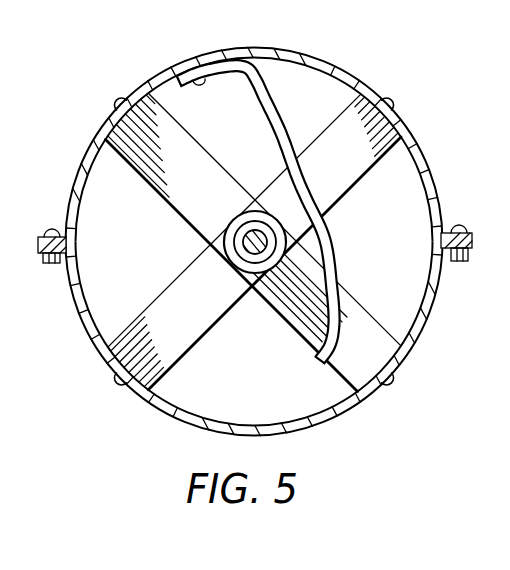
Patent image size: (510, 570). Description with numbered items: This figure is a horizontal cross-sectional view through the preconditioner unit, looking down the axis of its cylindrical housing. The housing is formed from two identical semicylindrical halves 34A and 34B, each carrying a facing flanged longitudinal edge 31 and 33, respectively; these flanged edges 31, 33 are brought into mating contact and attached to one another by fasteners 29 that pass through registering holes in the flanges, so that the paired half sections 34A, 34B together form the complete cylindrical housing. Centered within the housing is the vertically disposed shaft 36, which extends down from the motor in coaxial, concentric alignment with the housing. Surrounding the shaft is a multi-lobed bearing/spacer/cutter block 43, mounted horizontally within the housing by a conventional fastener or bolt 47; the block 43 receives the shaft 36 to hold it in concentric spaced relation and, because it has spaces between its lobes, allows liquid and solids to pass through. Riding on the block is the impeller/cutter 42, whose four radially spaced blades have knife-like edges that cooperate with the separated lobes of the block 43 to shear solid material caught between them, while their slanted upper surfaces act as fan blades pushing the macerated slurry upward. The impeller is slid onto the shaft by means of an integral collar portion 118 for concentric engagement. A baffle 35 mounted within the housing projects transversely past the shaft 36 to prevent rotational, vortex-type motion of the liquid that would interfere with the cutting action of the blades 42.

The fasteners 29 is at (461, 227).
The flanged longitudinal edge 31 is at (469, 250).
The flanged longitudinal edge 33 is at (472, 236).
The semicylindrical housing half 34A is at (176, 420).
The semicylindrical housing half 34B is at (271, 49).
The baffle 35 is at (333, 250).
The shaft 36 is at (246, 235).
The impeller/cutter 42 is at (358, 186).
The bearing/spacer/cutter block 43 is at (331, 196).
The fastener or bolt 47 is at (110, 104).
The collar portion 118 is at (250, 262).